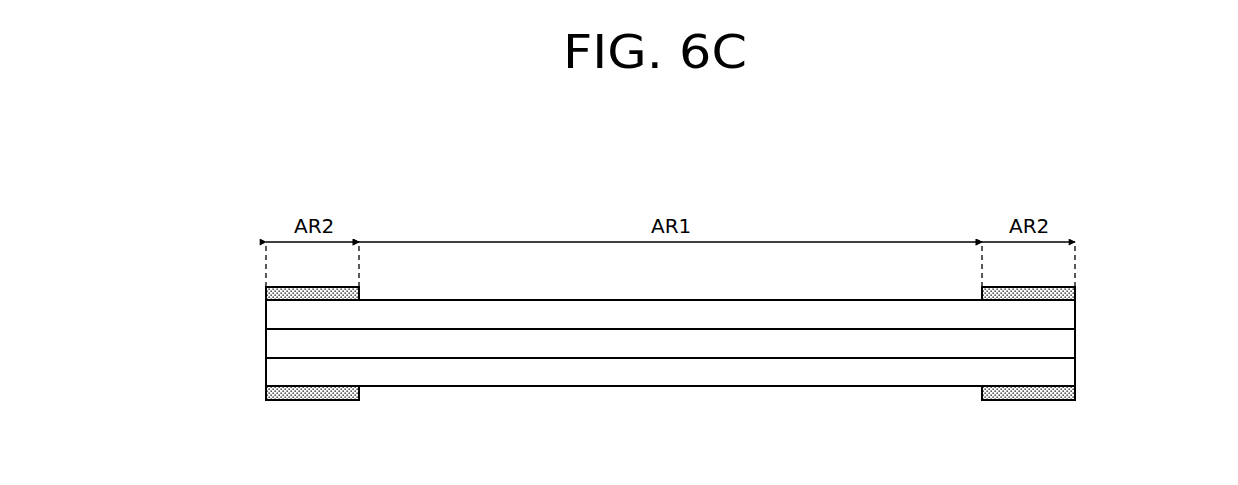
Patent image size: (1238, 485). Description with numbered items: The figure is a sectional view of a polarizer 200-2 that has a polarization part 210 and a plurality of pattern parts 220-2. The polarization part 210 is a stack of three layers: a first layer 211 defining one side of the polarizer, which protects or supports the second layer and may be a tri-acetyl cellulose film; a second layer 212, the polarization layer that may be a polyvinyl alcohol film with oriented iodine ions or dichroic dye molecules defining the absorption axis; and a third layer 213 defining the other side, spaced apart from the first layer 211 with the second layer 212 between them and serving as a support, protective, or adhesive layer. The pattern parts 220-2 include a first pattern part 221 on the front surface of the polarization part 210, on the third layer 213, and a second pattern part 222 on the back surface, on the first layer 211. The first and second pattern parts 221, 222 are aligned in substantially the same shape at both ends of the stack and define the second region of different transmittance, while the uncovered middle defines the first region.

The polarizer 200-2 is at (946, 200).
The polarization part 210 is at (1163, 310).
The first layer 211 is at (1066, 377).
The second layer 212 is at (1066, 348).
The third layer 213 is at (1066, 320).
The pattern parts 220-2 is at (178, 282).
The first pattern part 221 is at (267, 290).
The second pattern part 222 is at (267, 398).